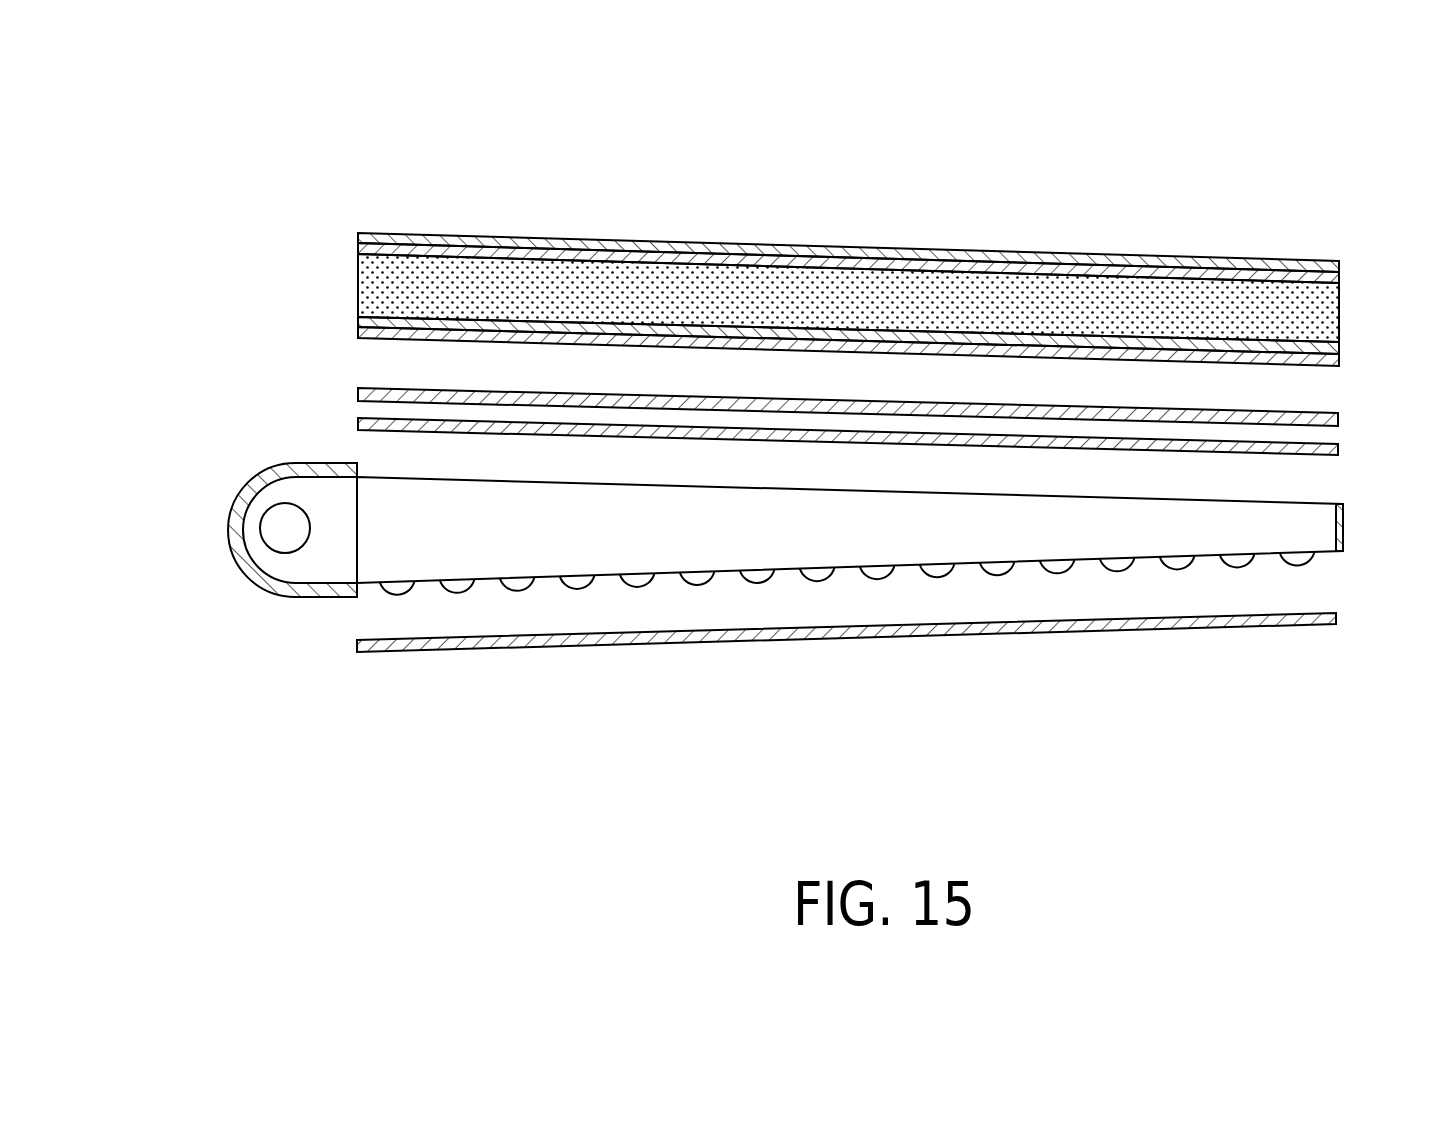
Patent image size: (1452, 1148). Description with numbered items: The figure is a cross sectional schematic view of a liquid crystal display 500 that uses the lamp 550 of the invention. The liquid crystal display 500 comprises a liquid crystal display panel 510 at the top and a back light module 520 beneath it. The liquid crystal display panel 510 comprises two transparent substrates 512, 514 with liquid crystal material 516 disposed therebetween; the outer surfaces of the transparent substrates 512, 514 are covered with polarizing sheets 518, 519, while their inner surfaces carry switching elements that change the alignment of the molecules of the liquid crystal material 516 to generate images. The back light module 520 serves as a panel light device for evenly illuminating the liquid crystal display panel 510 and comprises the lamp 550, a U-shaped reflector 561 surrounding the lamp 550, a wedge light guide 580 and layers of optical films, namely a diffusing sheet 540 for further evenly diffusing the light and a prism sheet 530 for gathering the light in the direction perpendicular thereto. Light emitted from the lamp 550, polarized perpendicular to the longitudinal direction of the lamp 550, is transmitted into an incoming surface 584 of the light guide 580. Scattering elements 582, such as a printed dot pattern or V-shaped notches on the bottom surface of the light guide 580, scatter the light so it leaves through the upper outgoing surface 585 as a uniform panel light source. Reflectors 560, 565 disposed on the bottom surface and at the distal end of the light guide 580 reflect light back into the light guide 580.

The liquid crystal display 500 is at (168, 192).
The liquid crystal display panel 510 is at (841, 282).
The transparent substrate 512 is at (453, 242).
The transparent substrate 514 is at (405, 323).
The liquid crystal material 516 is at (372, 292).
The polarizing sheet 518 is at (680, 248).
The polarizing sheet 519 is at (706, 346).
The back light module 520 is at (799, 589).
The prism sheet 530 is at (615, 402).
The diffusing sheet 540 is at (820, 443).
The lamp 550 is at (283, 524).
The reflector 560 is at (664, 640).
The U-shaped reflector 561 is at (298, 590).
The reflector 565 is at (1345, 536).
The light guide 580 is at (847, 666).
The scattering elements 582 is at (878, 570).
The incoming surface 584 is at (370, 550).
The outgoing surface 585 is at (848, 486).